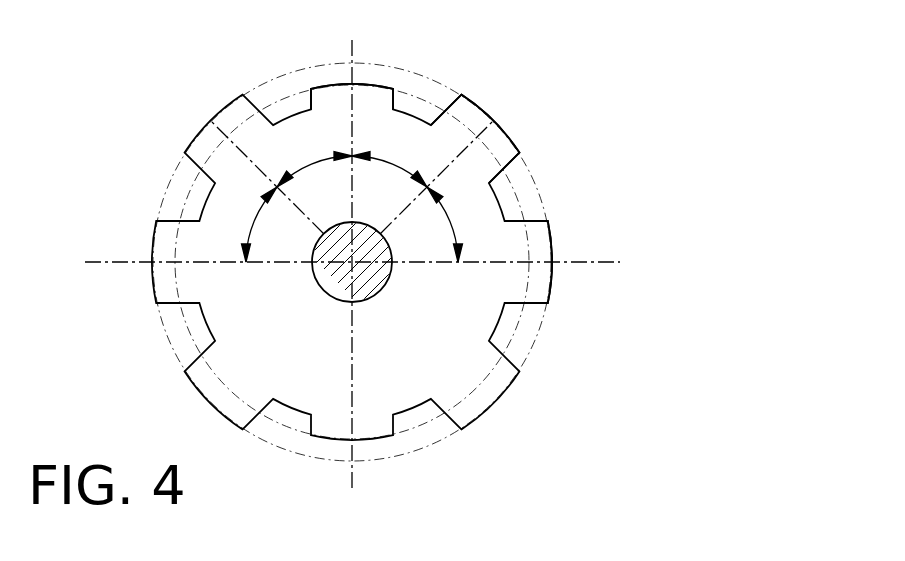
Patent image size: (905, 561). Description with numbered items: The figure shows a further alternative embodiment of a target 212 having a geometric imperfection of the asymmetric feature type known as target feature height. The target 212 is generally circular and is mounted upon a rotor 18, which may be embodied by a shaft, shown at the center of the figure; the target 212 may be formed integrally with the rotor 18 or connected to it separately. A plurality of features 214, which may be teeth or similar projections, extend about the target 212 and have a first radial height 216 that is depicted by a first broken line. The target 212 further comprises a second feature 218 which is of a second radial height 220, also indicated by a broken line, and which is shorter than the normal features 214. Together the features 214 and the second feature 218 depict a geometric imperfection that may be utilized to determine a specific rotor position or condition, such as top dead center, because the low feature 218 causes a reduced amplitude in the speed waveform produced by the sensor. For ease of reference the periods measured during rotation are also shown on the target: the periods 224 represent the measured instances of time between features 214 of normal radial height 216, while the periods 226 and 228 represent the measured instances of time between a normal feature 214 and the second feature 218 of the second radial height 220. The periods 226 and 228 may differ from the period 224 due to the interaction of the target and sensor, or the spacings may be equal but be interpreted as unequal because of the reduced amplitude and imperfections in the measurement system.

The target 212 is at (538, 80).
The features 214 is at (487, 157).
The first radial height 216 is at (313, 65).
The second feature 218 is at (373, 98).
The second radial height 220 is at (250, 90).
The periods 224 is at (254, 221).
The period 226 is at (392, 162).
The period 228 is at (313, 163).
The rotor 18 is at (378, 292).